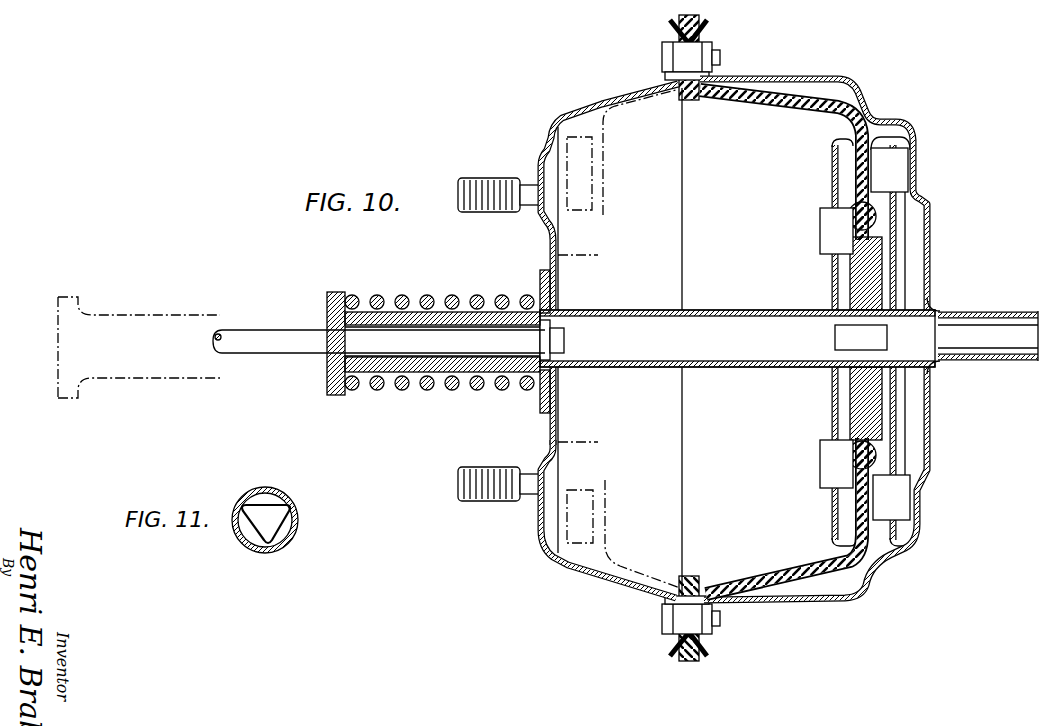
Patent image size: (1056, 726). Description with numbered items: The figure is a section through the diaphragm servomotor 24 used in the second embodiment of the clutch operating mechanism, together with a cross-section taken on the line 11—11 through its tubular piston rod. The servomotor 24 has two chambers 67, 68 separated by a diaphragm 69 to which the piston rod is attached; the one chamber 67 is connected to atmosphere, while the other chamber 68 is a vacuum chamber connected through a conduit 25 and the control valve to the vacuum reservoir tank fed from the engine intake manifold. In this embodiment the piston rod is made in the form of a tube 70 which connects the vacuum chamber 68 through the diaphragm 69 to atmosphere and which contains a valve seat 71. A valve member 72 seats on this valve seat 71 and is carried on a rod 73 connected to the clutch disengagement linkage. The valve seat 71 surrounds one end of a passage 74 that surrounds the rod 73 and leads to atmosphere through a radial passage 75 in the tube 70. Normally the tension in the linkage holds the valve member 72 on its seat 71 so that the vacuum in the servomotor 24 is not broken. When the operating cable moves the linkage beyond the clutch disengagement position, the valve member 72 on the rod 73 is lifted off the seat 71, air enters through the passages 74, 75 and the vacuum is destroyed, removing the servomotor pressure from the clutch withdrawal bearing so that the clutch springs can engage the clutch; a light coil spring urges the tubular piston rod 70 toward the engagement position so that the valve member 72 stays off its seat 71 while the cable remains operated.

In FIG. 10, the section line 11 is at (578, 342).
In FIG. 10, the diaphragm servomotor 24 is at (775, 77).
In FIG. 10, the conduit 25 is at (987, 340).
In FIG. 10, the chamber 67 is at (603, 110).
In FIG. 10, the chamber 68 is at (843, 98).
In FIG. 10, the diaphragm 69 is at (874, 117).
In FIG. 10, the tube 70 is at (712, 310).
In FIG. 11, the tube 70 is at (272, 494).
In FIG. 10, the valve seat 71 is at (535, 362).
In FIG. 10, the valve member 72 is at (536, 341).
In FIG. 11, the valve member 72 is at (265, 520).
In FIG. 10, the rod 73 is at (262, 345).
In FIG. 10, the passage 74 is at (490, 358).
In FIG. 10, the radial passage 75 is at (443, 325).